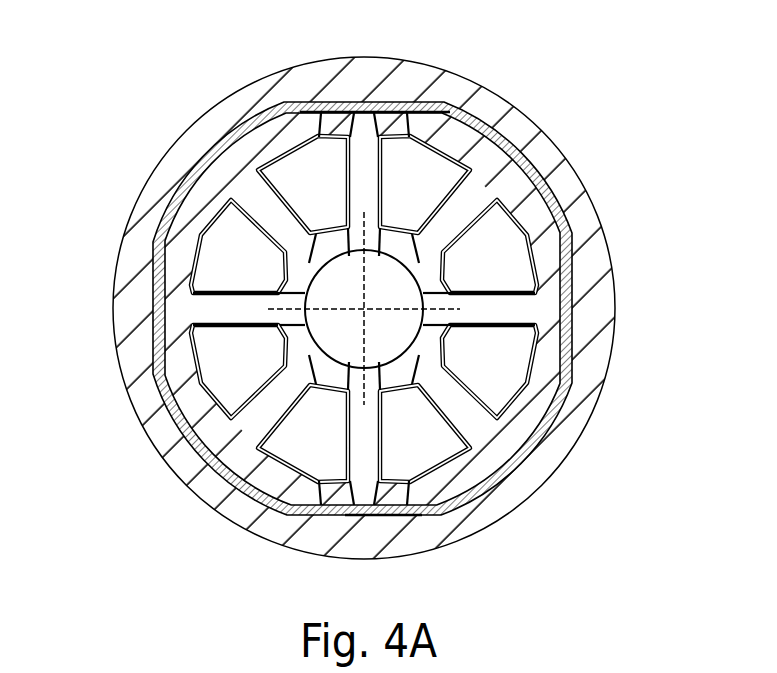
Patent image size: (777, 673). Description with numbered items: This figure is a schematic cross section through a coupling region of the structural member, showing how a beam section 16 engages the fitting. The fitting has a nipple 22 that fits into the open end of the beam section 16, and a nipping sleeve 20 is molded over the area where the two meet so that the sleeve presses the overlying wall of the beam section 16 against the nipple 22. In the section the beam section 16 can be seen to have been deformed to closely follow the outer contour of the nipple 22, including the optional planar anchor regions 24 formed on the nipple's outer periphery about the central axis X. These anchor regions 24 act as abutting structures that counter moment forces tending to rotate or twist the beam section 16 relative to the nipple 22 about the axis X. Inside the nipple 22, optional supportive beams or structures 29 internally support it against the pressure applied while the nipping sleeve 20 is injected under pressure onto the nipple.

The nipping sleeve 20 is at (555, 142).
The beam section 16 is at (575, 282).
The anchor region 24 is at (352, 110).
The nipple 22 is at (226, 178).
The supportive beam/structure 29 is at (257, 394).
The central axis X is at (366, 311).